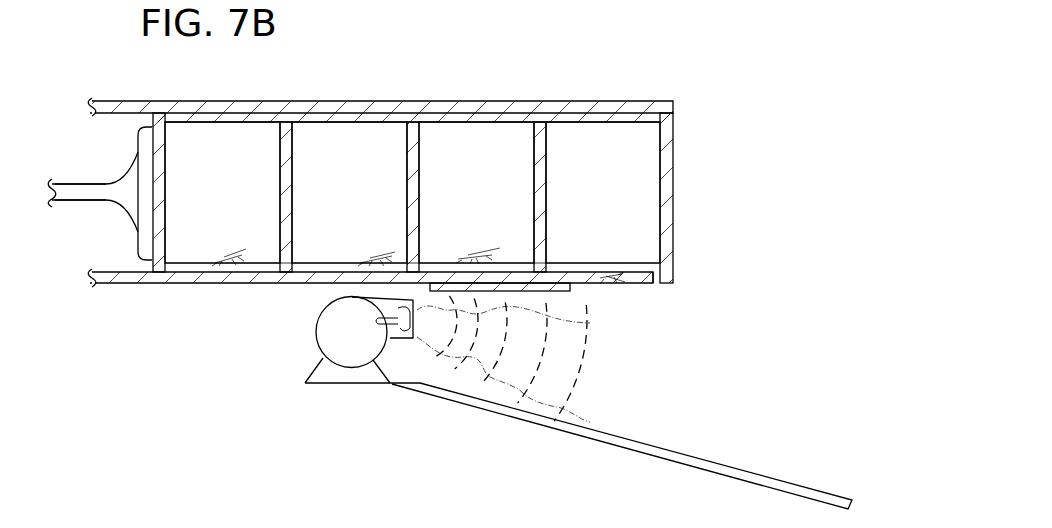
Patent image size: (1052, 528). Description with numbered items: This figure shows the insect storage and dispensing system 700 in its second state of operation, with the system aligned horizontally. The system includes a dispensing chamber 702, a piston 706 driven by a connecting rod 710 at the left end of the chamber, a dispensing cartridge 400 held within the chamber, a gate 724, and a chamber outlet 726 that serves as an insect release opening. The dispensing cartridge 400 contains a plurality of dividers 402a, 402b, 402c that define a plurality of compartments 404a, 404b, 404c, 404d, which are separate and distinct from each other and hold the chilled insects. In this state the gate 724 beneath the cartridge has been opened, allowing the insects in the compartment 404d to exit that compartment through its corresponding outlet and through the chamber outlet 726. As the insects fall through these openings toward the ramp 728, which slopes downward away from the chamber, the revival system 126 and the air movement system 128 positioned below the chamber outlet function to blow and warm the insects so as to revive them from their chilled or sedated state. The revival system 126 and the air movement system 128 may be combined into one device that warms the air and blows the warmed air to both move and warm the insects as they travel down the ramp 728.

The insect storage and dispensing system 700 is at (722, 98).
The dispensing cartridge 400 is at (673, 175).
The divider 402a is at (293, 153).
The divider 402b is at (420, 158).
The divider 402c is at (546, 167).
The compartment 404a is at (217, 160).
The compartment 404b is at (358, 158).
The compartment 404c is at (503, 143).
The compartment 404d is at (622, 203).
The dispensing chamber 702 is at (152, 103).
The piston 706 is at (140, 150).
The connecting rod 710 is at (72, 200).
The gate 724 is at (513, 283).
The chamber outlet 726 is at (638, 283).
The ramp 728 is at (733, 467).
The revival system 126 is at (368, 342).
The air movement system 128 is at (410, 342).